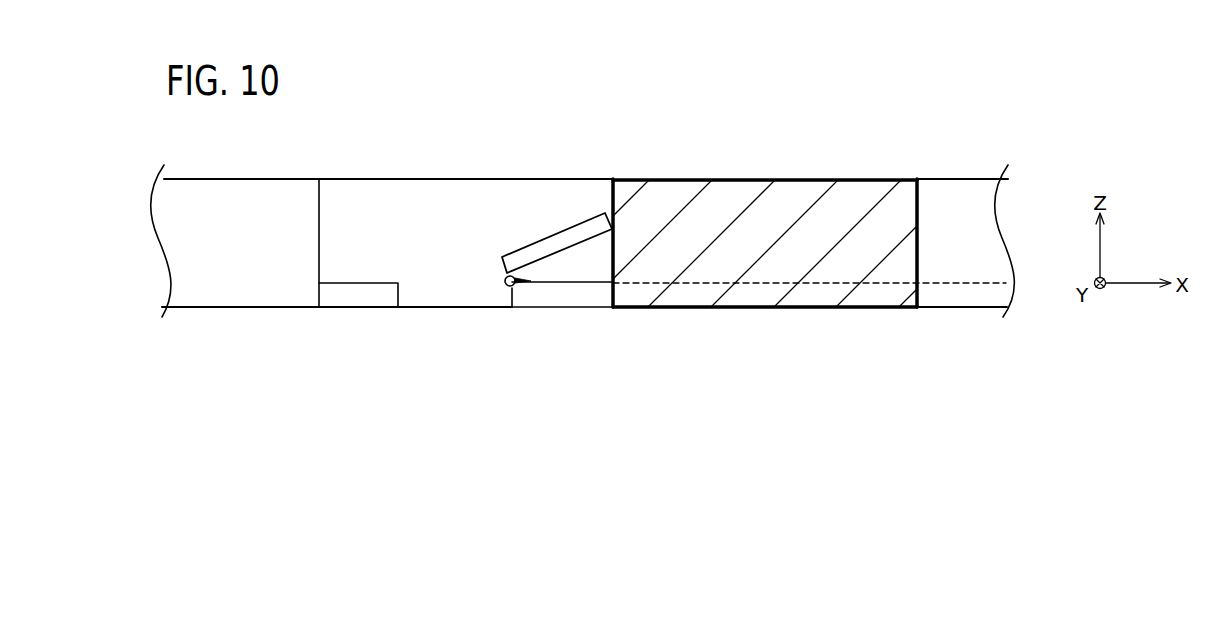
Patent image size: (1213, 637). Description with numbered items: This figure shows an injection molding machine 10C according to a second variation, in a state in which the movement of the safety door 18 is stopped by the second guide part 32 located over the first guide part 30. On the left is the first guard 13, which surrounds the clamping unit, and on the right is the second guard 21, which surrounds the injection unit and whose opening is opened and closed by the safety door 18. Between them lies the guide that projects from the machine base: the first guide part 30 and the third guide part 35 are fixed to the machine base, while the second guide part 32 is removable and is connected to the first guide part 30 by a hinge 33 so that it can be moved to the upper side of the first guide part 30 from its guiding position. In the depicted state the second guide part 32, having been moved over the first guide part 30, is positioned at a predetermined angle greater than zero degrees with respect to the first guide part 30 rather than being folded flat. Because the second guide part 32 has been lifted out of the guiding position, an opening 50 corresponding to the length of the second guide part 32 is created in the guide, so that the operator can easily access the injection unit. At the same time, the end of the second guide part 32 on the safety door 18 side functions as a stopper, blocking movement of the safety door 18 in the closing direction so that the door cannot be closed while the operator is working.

The injection molding machine 10C is at (764, 166).
The first guard 13 is at (253, 293).
The safety door 18 is at (693, 193).
The second guard 21 is at (964, 295).
The first guide part 30 is at (563, 293).
The second guide part 32 is at (583, 237).
The hinge 33 is at (504, 280).
The third guide part 35 is at (372, 294).
The opening 50 is at (448, 290).